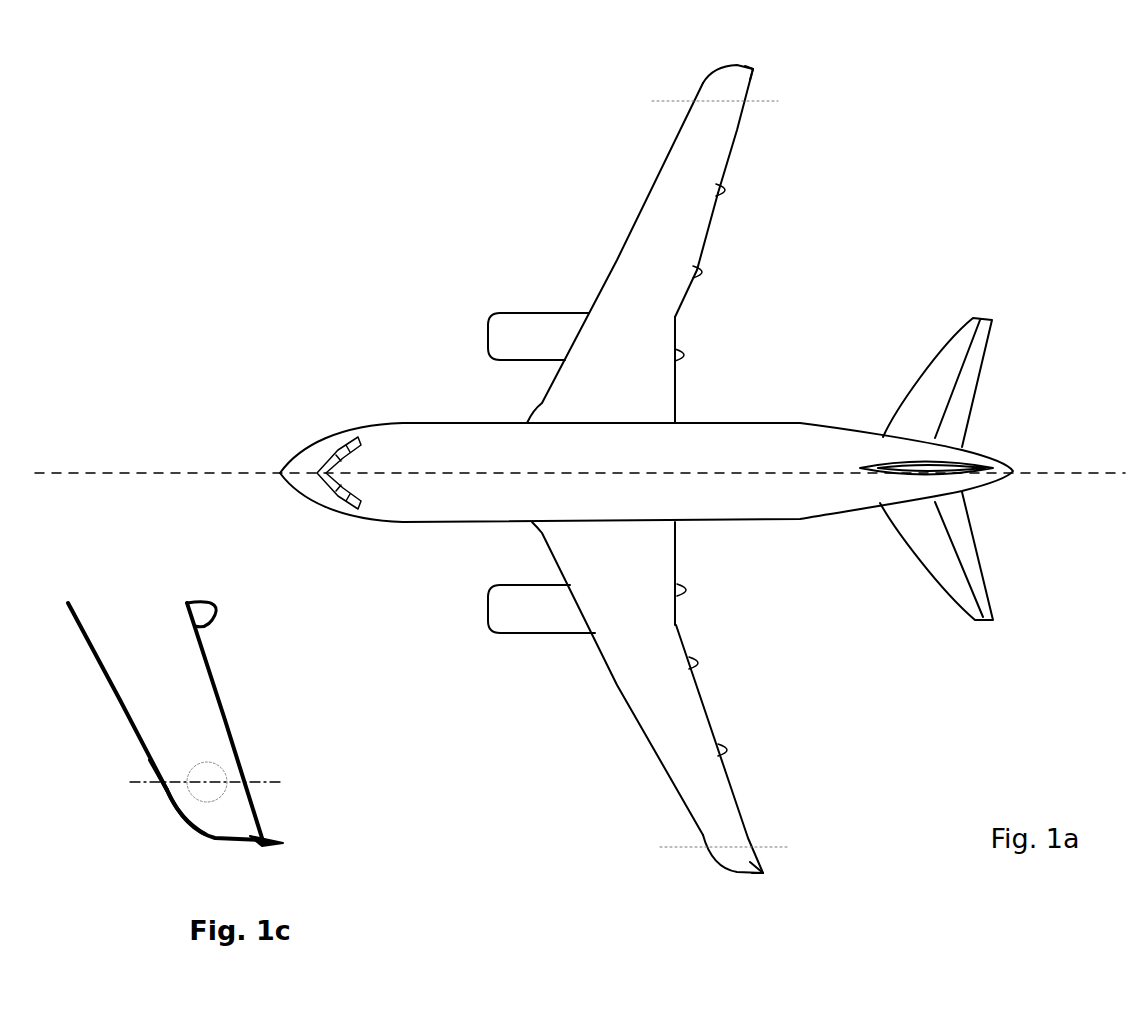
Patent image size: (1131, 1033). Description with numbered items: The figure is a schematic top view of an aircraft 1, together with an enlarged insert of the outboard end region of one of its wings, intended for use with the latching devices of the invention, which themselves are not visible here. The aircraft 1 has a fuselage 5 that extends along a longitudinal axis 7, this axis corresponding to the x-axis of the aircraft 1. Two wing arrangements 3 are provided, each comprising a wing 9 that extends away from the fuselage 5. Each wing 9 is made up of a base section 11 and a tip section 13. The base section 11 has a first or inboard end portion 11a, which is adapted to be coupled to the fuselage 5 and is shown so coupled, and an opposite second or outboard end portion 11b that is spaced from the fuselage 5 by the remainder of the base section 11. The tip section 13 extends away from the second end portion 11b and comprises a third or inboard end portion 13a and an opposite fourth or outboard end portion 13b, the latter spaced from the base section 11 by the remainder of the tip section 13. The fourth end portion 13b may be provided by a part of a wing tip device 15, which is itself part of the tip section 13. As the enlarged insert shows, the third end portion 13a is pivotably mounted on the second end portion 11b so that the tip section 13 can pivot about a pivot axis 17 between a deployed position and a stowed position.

In FIG. 1A, the aircraft 1 is at (941, 211).
In FIG. 1A, the wing arrangement 3 is at (570, 177).
In FIG. 1A, the fuselage 5 is at (808, 513).
In FIG. 1A, the longitudinal axis 7 is at (68, 473).
In FIG. 1A, the wing 9 is at (615, 260).
In FIG. 1A, the base section 11 is at (675, 250).
In FIG. 1C, the base section 11 is at (107, 648).
In FIG. 1A, the first or inboard end portion 11a is at (655, 413).
In FIG. 1A, the second or outboard end portion 11b is at (740, 107).
In FIG. 1C, the second or outboard end portion 11b is at (254, 762).
In FIG. 1A, the tip section 13 is at (732, 80).
In FIG. 1C, the tip section 13 is at (212, 818).
In FIG. 1C, the third or inboard end portion 13a is at (155, 806).
In FIG. 1C, the fourth or outboard end portion 13b is at (301, 842).
In FIG. 1A, the wing tip device 15 is at (755, 68).
In FIG. 1C, the pivot axis 17 is at (222, 780).